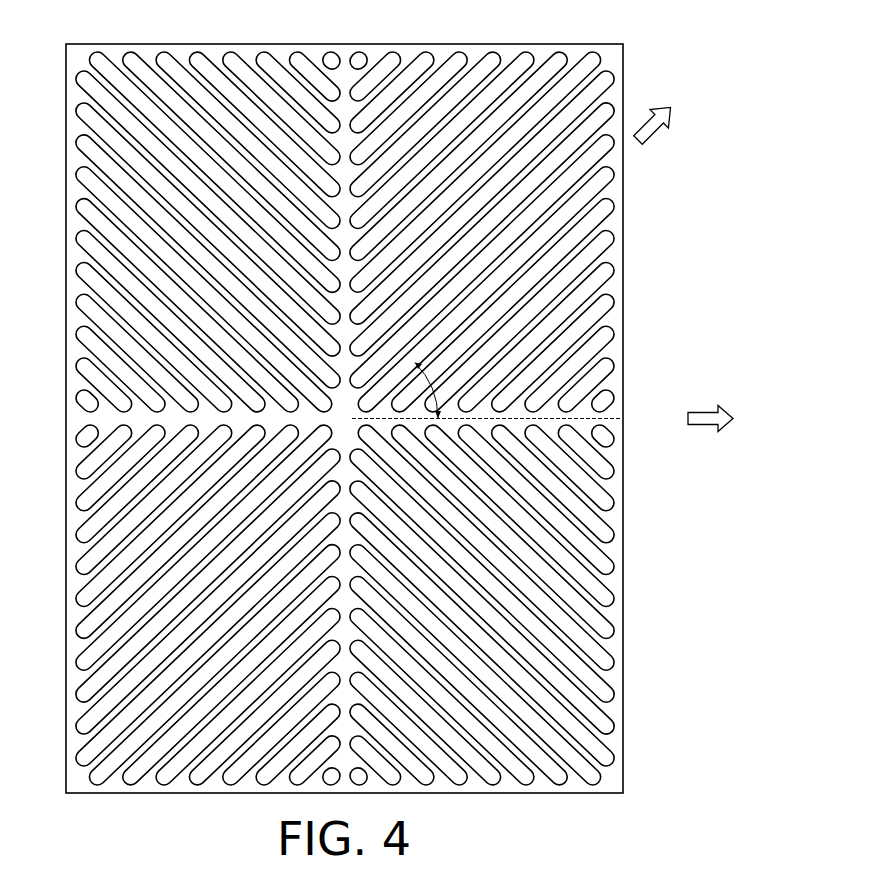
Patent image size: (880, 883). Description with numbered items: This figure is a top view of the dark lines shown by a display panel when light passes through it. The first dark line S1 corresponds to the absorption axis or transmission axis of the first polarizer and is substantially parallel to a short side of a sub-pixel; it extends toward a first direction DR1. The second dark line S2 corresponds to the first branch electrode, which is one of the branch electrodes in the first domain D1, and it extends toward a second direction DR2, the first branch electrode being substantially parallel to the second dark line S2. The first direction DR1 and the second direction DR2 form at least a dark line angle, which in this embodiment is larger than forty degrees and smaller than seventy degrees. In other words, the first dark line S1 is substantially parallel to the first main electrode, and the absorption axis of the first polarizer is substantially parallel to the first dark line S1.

The first domain D1 is at (549, 46).
The first dark line S1 is at (594, 419).
The second dark line S2 is at (603, 184).
The first direction DR1 is at (708, 404).
The second direction DR2 is at (679, 120).